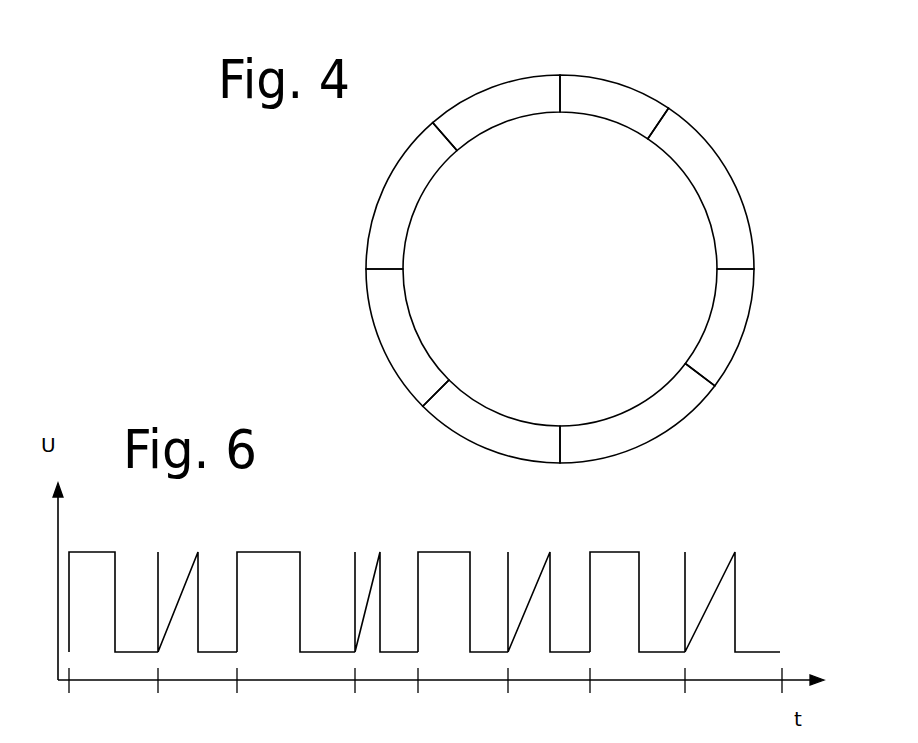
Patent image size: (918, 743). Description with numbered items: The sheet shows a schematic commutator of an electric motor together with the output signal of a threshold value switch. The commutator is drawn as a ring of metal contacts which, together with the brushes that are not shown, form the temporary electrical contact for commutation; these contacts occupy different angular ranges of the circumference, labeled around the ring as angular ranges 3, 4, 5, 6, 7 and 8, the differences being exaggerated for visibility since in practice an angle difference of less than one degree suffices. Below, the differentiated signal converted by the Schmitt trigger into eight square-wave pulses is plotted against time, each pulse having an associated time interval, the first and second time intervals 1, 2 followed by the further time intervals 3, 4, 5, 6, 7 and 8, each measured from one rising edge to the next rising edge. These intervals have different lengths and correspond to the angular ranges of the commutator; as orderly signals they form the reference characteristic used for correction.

In FIG. 6, the angular range φ1 / time interval Δt1 1 is at (113, 637).
In FIG. 6, the angular range φ2 / time interval Δt2 2 is at (197, 637).
In FIG. 4, the angular range φ3 / time interval Δt3 3 is at (706, 188).
In FIG. 6, the angular range φ3 / time interval Δt3 3 is at (296, 637).
In FIG. 4, the angular range φ4 / time interval Δt4 4 is at (725, 327).
In FIG. 6, the angular range φ4 / time interval Δt4 4 is at (386, 637).
In FIG. 4, the angular range φ5 / time interval Δt5 5 is at (637, 414).
In FIG. 6, the angular range φ5 / time interval Δt5 5 is at (463, 637).
In FIG. 4, the angular range φ6 / time interval Δt6 6 is at (491, 426).
In FIG. 6, the angular range φ6 / time interval Δt6 6 is at (549, 637).
In FIG. 4, the angular range φ7 / time interval Δt7 7 is at (397, 337).
In FIG. 6, the angular range φ7 / time interval Δt7 7 is at (637, 637).
In FIG. 4, the angular range φ8 / time interval Δt8 8 is at (401, 196).
In FIG. 6, the angular range φ8 / time interval Δt8 8 is at (732, 637).